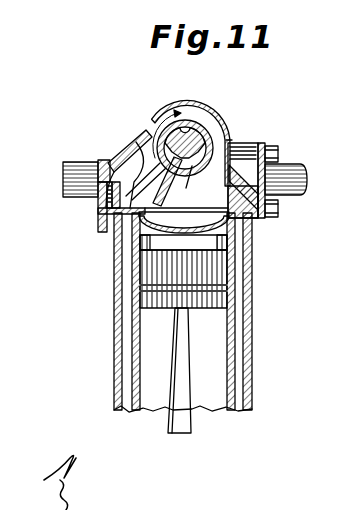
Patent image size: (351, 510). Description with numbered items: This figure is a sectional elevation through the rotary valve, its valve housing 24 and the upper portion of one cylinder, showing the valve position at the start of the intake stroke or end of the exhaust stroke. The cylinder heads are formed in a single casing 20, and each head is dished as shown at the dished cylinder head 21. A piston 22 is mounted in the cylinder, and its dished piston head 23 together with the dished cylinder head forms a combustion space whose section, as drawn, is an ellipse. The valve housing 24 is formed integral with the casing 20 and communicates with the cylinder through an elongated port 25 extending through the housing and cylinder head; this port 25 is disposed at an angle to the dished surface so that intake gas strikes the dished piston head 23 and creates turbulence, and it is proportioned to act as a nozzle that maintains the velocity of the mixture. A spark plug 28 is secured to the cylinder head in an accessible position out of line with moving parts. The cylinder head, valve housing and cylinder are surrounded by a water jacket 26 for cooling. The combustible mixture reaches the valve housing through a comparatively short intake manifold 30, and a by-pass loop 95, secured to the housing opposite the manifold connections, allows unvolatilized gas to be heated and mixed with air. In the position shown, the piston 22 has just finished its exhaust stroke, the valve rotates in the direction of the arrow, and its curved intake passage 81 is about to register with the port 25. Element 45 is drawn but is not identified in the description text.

The casing 20 is at (108, 160).
The dished cylinder head 21 is at (196, 198).
The piston 22 is at (167, 309).
The dished piston head 23 is at (185, 219).
The valve housing 24 is at (190, 125).
The port 25 is at (140, 150).
The water jacket 26 is at (225, 138).
The spark plug 28 is at (251, 158).
The intake manifold 30 is at (296, 165).
The cover 45 is at (222, 142).
The intake passage 81 is at (190, 168).
The loop 95 is at (82, 209).